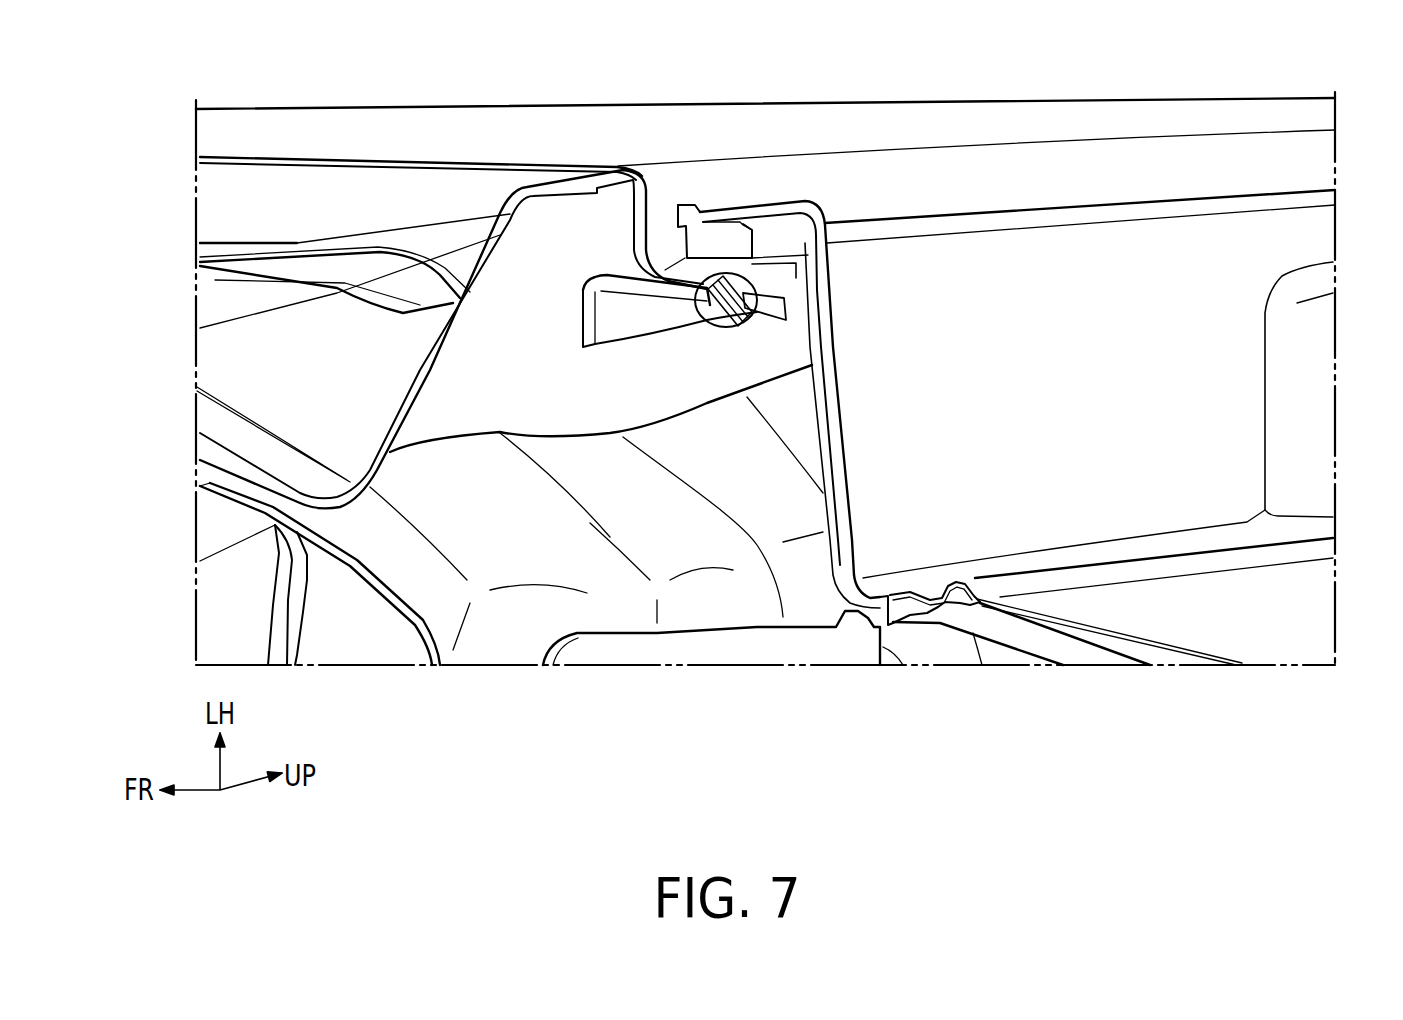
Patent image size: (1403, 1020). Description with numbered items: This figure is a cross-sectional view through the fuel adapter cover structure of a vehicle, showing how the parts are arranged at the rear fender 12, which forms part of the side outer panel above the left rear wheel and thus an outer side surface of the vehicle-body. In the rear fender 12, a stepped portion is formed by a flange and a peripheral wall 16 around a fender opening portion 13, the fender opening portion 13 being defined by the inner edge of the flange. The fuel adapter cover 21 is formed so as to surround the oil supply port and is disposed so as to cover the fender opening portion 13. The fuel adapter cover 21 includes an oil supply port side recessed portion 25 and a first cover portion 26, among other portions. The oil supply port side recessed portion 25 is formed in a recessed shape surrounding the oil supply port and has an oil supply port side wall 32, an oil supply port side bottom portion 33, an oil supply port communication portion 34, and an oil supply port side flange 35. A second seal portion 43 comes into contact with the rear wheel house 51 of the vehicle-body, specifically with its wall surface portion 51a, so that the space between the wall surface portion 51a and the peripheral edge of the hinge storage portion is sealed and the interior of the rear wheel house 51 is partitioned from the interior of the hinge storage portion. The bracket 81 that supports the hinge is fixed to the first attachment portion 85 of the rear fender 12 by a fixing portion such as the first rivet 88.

The rear fender 12 is at (430, 105).
The fender opening portion 13 is at (802, 270).
The peripheral wall 16 is at (1237, 167).
The fuel adapter cover 21 is at (997, 196).
The oil supply port side recessed portion 25 is at (1035, 216).
The first cover portion 26 is at (727, 207).
The oil supply port side wall 32 is at (1232, 380).
The oil supply port side bottom portion 33 is at (1067, 557).
The oil supply port communication portion 34 is at (1250, 623).
The oil supply port side flange 35 is at (1127, 203).
The second seal portion 43 is at (683, 213).
The rear wheel house 51 is at (473, 260).
The wall surface portion 51a is at (490, 380).
The bracket 81 is at (588, 315).
The first attachment portion 85 is at (773, 290).
The first rivet 88 is at (727, 324).